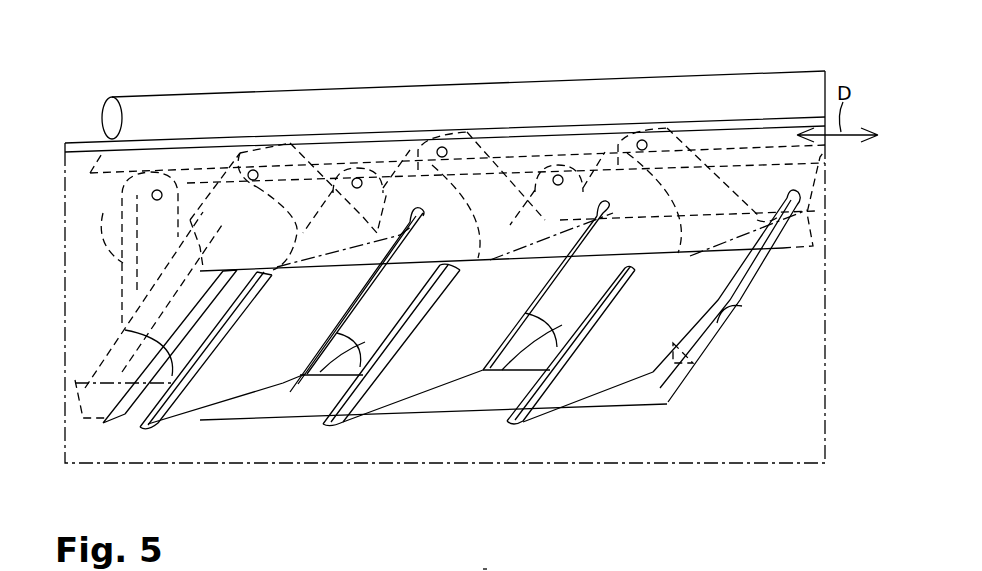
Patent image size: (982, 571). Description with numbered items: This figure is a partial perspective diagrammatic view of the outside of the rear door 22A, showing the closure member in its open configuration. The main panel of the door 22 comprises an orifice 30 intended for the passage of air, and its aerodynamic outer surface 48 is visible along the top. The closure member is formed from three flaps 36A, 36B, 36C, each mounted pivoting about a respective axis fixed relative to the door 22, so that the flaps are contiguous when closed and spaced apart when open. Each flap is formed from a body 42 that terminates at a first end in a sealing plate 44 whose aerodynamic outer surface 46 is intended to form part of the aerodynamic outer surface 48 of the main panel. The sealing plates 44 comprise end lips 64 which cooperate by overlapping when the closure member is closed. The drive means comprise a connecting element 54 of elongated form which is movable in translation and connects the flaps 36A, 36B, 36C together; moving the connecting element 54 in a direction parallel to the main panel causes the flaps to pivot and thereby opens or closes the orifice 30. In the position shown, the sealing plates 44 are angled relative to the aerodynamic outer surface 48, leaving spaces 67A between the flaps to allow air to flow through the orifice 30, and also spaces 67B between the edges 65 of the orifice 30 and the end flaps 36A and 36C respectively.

The rear door 22A is at (76, 122).
The rear door 22 is at (445, 309).
The aerodynamic outer surface 48 is at (367, 437).
The orifice 30 is at (258, 405).
The flap 36A is at (202, 416).
The flap 36B is at (400, 406).
The flap 36C is at (582, 404).
The body 42 is at (501, 372).
The sealing plate 44 is at (635, 278).
The aerodynamic outer surface 46 is at (548, 406).
The connecting element 54 is at (482, 558).
The end lip 64 is at (420, 216).
The edge 65 is at (112, 400).
The space 67A is at (294, 395).
The space 67B is at (133, 414).